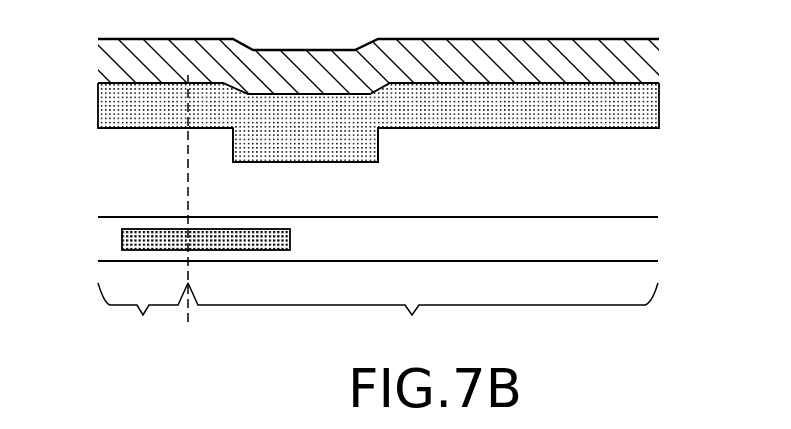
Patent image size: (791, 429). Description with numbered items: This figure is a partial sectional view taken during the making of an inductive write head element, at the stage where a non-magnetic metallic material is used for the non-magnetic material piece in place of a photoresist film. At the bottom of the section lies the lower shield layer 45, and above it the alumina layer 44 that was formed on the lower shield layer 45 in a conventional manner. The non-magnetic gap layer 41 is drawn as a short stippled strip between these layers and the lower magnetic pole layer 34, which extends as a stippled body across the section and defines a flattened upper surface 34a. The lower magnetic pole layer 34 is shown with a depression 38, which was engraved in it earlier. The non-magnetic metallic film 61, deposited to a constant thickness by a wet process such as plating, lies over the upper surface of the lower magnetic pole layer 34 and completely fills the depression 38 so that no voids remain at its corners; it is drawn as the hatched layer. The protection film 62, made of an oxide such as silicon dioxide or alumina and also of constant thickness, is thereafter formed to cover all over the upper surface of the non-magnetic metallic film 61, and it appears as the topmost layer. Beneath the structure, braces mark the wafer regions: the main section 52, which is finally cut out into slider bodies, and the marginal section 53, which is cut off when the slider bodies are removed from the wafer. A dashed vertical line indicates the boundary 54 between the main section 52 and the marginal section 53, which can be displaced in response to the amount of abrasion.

The protection film 62 is at (638, 38).
The non-magnetic metallic film 61 is at (638, 82).
The lower magnetic pole layer 34 is at (127, 138).
The flattened upper surface 34a is at (638, 128).
The depression 38 is at (371, 158).
The non-magnetic gap layer 41 is at (227, 229).
The alumina layer 44 is at (637, 217).
The lower shield layer 45 is at (637, 261).
The main section 52 is at (423, 320).
The marginal section 53 is at (143, 319).
The boundary 54 is at (189, 316).